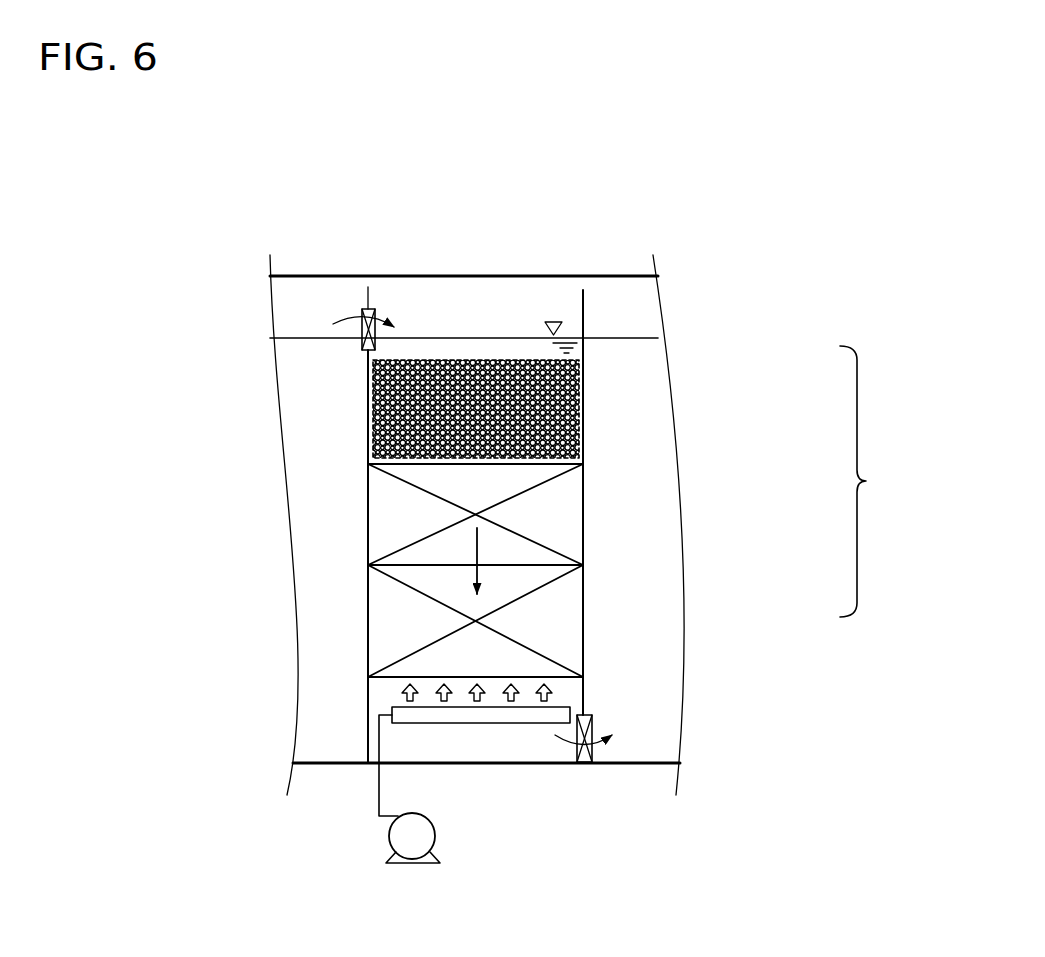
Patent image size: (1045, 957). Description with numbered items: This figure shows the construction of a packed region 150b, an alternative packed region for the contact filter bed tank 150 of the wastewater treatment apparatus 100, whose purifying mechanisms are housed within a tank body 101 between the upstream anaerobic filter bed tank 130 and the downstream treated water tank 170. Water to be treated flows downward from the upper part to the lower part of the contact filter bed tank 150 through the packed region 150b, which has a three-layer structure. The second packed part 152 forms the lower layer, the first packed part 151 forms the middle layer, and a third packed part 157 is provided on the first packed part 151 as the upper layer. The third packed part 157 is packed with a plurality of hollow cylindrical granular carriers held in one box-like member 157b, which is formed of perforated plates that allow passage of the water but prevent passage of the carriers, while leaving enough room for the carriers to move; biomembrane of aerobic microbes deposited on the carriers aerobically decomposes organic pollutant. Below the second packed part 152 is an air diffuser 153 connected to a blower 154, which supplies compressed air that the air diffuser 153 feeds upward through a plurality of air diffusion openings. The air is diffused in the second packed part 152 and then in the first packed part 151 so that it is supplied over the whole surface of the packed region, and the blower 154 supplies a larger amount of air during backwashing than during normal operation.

The wastewater treatment apparatus 100 is at (678, 197).
The tank body 101 is at (307, 272).
The anaerobic filter bed tank 130 is at (322, 767).
The treated water tank 170 is at (634, 768).
The contact filter bed tank 150 is at (494, 321).
The packed region 150b is at (888, 481).
The first packed part 151 is at (585, 524).
The second packed part 152 is at (585, 620).
The third packed part 157 is at (585, 430).
The box-like member 157b is at (370, 370).
The air diffuser 153 is at (474, 726).
The blower 154 is at (437, 844).